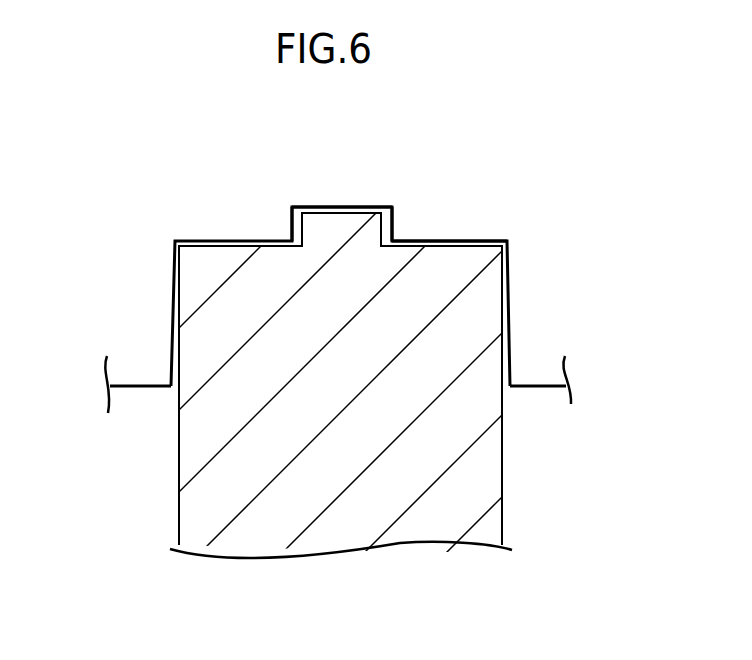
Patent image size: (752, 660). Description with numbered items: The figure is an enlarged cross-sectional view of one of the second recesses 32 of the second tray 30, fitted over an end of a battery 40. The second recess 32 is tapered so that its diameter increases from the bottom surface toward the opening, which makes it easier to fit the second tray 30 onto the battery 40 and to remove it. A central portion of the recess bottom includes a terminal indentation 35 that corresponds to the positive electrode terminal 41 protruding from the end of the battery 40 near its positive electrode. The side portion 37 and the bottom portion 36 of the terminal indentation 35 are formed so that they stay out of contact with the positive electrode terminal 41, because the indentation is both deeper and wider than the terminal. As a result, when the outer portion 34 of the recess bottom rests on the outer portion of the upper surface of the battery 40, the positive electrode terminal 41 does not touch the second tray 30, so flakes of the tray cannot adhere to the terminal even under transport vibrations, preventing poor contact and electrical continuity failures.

The second tray 30 is at (532, 385).
The second recess 32 is at (158, 282).
The outer portion of the bottom surface of the second recess 34 is at (443, 240).
The terminal indentation 35 is at (353, 208).
The bottom portion of the terminal indentation 36 is at (308, 207).
The side portion of the terminal indentation 37 is at (393, 222).
The battery 40 is at (345, 535).
The positive electrode terminal 41 is at (315, 232).